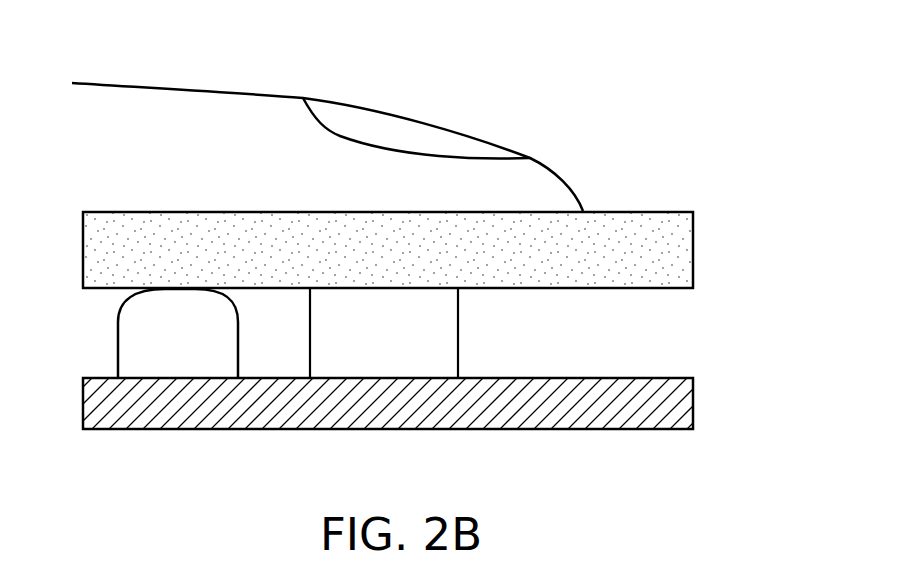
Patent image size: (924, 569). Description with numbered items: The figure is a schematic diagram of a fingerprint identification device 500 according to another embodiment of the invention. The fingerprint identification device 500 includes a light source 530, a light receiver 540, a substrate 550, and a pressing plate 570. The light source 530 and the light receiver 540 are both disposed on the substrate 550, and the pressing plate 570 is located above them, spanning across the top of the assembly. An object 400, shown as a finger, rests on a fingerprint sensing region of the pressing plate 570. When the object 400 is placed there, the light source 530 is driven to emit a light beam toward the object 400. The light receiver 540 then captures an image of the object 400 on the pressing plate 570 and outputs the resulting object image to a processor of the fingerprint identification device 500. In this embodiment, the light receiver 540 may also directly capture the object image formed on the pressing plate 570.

The object 400 is at (238, 97).
The pressing plate 570 is at (683, 252).
The light source 530 is at (127, 330).
The light receiver 540 is at (443, 331).
The substrate 550 is at (683, 402).
The fingerprint identification device 500 is at (757, 490).